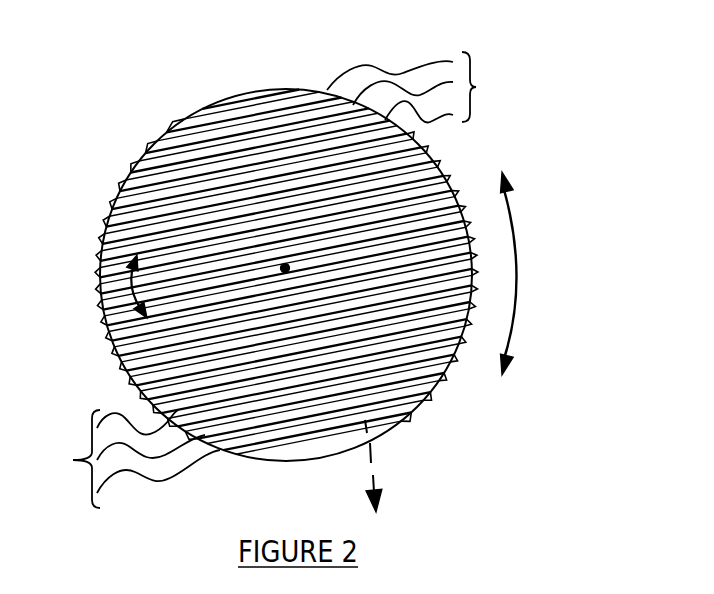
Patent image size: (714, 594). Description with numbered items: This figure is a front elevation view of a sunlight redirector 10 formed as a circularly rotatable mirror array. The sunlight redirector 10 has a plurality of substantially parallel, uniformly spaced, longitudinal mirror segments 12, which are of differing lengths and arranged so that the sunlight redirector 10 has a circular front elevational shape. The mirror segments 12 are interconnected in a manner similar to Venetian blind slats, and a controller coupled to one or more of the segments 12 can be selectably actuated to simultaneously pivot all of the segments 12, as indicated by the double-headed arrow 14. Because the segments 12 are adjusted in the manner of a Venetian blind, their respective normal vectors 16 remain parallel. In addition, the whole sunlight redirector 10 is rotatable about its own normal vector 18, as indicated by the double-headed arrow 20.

The sunlight redirector 10 is at (157, 110).
The longitudinal mirror segments 12 is at (277, 280).
The double-headed arrow 14 is at (98, 288).
The normal vectors 16 is at (370, 460).
The normal vector 18 is at (287, 265).
The double-headed arrow 20 is at (517, 232).